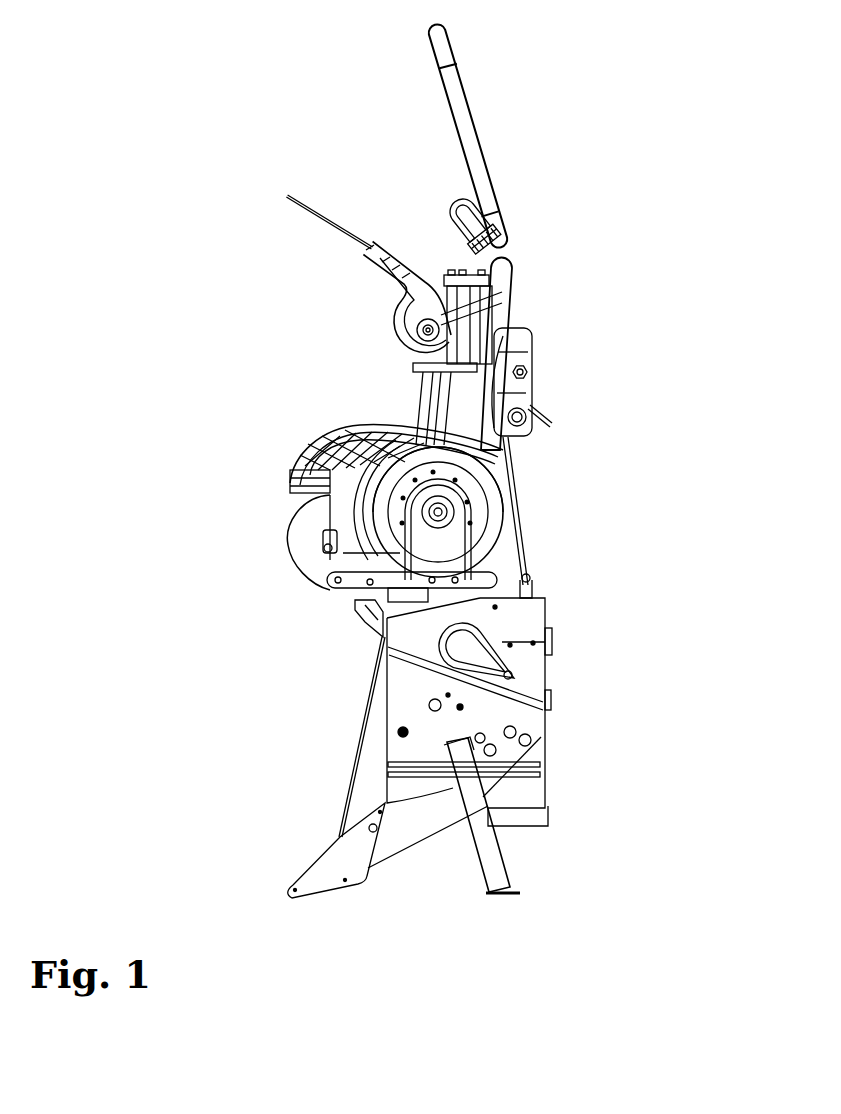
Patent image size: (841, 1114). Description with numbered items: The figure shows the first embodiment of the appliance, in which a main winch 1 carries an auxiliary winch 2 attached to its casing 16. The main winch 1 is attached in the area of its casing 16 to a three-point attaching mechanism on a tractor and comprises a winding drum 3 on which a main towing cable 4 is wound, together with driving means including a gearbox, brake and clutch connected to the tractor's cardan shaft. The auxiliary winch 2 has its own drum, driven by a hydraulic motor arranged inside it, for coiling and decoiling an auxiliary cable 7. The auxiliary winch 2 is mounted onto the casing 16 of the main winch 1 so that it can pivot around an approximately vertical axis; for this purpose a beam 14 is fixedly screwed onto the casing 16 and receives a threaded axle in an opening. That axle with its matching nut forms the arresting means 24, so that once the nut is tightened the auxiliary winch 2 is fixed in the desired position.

The main winch 1 is at (555, 746).
The auxiliary winch 2 is at (288, 460).
The winding drum 3 is at (547, 665).
The main towing cable 4 is at (355, 252).
The auxiliary cable 7 is at (283, 498).
The beam 14 is at (357, 598).
The casing 16 is at (400, 702).
The arresting means 24 is at (527, 573).